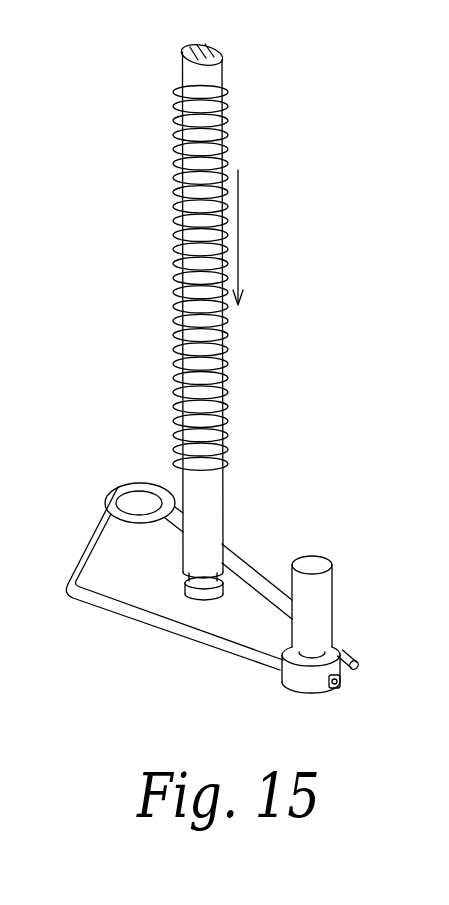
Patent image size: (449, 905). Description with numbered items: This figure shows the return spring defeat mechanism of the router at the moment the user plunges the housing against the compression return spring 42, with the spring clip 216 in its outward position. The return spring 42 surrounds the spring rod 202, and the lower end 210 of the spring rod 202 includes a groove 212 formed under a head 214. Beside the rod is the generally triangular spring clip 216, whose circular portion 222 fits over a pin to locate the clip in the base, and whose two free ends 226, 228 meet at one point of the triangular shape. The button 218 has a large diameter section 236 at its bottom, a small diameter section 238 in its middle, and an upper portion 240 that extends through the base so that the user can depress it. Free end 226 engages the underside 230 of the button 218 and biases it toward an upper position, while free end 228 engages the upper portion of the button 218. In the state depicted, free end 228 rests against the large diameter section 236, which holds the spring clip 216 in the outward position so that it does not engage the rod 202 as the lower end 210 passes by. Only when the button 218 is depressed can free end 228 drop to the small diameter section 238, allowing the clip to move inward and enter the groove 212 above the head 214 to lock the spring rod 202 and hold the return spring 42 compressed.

The spring rod 202 is at (208, 46).
The return spring 42 is at (228, 110).
The circular portion 222 is at (130, 495).
The spring clip 216 is at (132, 619).
The lower end 210 is at (183, 588).
The groove 212 is at (190, 574).
The head 214 is at (188, 588).
The button 218 is at (325, 575).
The upper portion 240 is at (300, 590).
The large diameter section 236 is at (310, 676).
The small diameter section 238 is at (335, 648).
The underside 230 is at (308, 694).
The free end 228 is at (357, 652).
The free end 226 is at (340, 684).